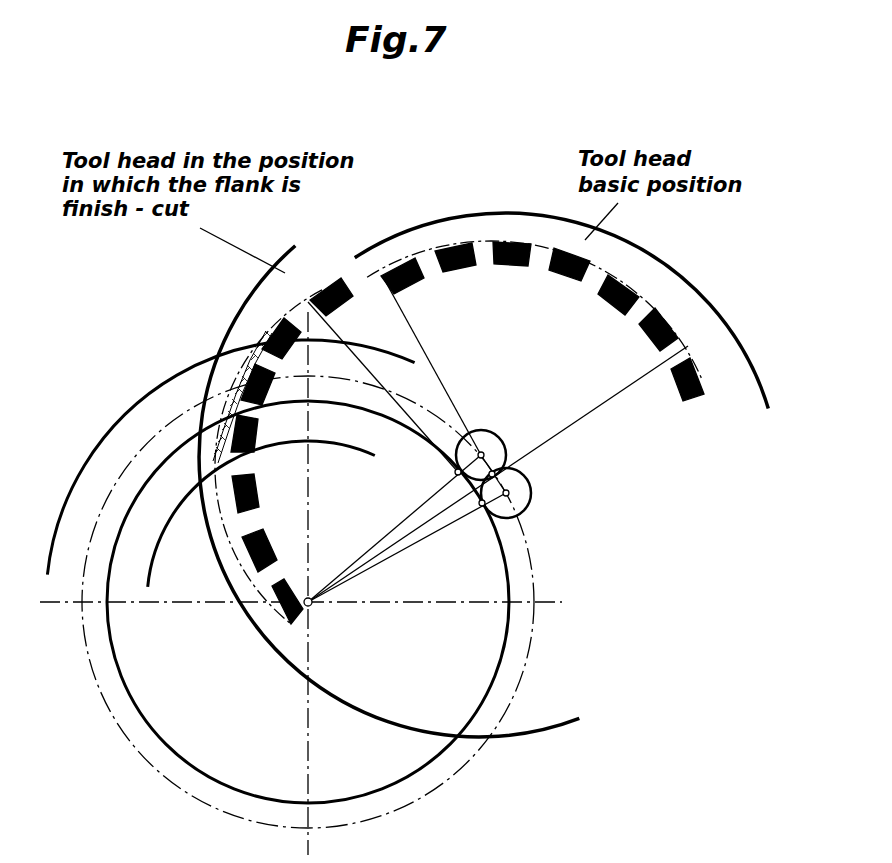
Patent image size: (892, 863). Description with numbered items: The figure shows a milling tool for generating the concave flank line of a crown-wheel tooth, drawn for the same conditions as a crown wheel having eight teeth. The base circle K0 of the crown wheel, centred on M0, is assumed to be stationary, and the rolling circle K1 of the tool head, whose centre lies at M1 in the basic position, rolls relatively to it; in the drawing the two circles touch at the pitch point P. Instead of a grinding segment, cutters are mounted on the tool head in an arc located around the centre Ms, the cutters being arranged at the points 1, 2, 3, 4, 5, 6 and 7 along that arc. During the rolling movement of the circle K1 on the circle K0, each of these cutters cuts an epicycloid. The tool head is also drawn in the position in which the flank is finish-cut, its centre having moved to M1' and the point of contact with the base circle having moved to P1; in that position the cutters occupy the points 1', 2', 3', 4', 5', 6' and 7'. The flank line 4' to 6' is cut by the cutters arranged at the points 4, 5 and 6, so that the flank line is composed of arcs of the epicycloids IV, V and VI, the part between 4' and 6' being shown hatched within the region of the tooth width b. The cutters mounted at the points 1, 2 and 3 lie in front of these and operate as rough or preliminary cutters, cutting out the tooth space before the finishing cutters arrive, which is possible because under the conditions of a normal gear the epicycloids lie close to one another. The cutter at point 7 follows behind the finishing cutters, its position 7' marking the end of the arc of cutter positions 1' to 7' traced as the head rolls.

The cutter point 1 is at (395, 273).
The cutter point 2 is at (450, 251).
The cutter point 3 is at (507, 243).
The cutter point 4 is at (567, 254).
The cutter point 5 is at (618, 284).
The cutter point 6 is at (658, 319).
The cutter point 7 is at (689, 370).
The cutter position 1' is at (287, 612).
The cutter position 2' is at (255, 562).
The cutter position 3' is at (236, 503).
The flank line end point 4' is at (231, 440).
The flank line point 5' is at (247, 384).
The flank line end point 6' is at (276, 338).
The cutter position 7' is at (322, 297).
The workpiece axis / center M0 is at (324, 617).
The tool head axis in basic position M1 is at (420, 544).
The tool head axis in finish-cut position M1' is at (407, 516).
The centre of the cutter arc Ms is at (494, 472).
The base circle of the crown wheel K0 is at (504, 651).
The rolling circle K1 is at (506, 493).
The pitch point in basic position P is at (476, 516).
The pitch point in finish-cut position P1 is at (457, 486).
The tooth width b is at (150, 560).